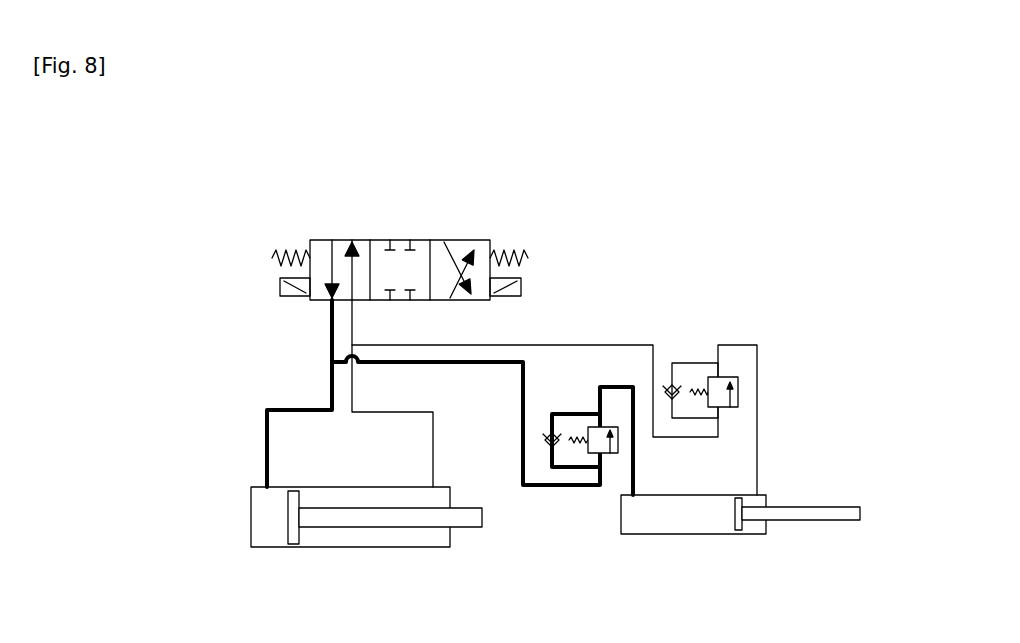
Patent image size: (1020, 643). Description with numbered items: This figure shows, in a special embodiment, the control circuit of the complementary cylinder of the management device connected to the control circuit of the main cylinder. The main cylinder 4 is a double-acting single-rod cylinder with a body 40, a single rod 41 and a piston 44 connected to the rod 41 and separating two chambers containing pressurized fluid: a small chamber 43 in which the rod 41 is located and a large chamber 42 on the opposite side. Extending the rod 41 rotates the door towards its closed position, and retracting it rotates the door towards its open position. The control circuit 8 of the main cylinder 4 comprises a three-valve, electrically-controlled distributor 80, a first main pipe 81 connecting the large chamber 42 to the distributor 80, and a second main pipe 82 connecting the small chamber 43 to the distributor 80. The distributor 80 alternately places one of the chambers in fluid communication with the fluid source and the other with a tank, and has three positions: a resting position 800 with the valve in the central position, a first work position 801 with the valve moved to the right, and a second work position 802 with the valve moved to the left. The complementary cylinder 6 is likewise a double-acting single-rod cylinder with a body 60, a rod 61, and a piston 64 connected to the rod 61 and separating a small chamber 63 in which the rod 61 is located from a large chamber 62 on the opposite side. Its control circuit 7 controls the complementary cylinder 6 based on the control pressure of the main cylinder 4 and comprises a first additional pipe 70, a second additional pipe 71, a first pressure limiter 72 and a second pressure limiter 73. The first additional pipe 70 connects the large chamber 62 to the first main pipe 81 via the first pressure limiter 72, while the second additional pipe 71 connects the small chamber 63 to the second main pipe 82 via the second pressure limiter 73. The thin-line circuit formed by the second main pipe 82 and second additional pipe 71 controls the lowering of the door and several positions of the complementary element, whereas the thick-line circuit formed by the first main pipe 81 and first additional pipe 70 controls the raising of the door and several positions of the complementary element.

The control circuit of the main cylinder 8 is at (222, 315).
The distributor 80 is at (512, 230).
The resting position 800 is at (398, 240).
The first work position 801 is at (322, 240).
The second work position 802 is at (460, 240).
The first main pipe 81 is at (262, 438).
The second main pipe 82 is at (393, 415).
The first additional pipe 70 is at (494, 367).
The control circuit of the complementary cylinder 7 is at (640, 315).
The second additional pipe 71 is at (587, 345).
The first pressure limiter 72 is at (575, 462).
The second pressure limiter 73 is at (738, 355).
The main cylinder 4 is at (292, 562).
The body 40 is at (333, 553).
The rod 41 is at (373, 517).
The large chamber 42 is at (265, 503).
The small chamber 43 is at (427, 537).
The piston 44 is at (292, 535).
The complementary cylinder 6 is at (710, 548).
The body 60 is at (663, 535).
The rod 61 is at (826, 510).
The large chamber 62 is at (633, 517).
The small chamber 63 is at (767, 528).
The piston 64 is at (737, 535).